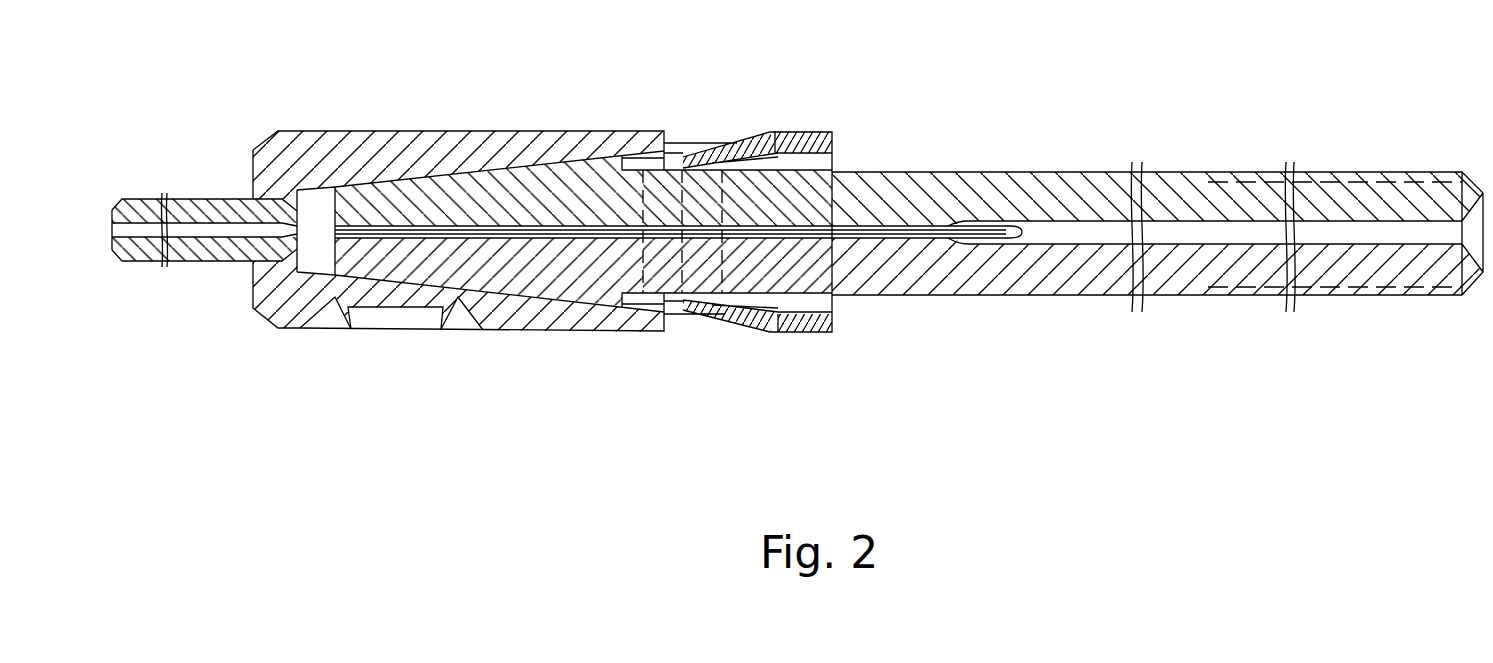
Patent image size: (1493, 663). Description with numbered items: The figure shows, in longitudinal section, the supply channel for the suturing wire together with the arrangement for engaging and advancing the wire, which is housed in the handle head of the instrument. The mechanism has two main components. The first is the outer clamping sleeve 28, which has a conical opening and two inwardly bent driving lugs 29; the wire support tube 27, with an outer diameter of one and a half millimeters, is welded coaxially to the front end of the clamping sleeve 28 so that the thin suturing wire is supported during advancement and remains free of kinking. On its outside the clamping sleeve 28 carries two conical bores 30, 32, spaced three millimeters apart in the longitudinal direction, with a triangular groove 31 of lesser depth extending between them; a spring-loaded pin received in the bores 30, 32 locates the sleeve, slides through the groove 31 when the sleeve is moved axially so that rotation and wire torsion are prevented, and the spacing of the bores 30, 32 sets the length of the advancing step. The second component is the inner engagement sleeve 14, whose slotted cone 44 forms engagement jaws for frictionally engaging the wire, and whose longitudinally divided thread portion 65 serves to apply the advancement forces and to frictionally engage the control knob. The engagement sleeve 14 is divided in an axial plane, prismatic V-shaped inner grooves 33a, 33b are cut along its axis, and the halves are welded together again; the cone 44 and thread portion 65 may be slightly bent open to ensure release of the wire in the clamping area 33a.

The inner engagement sleeve 14 is at (945, 198).
The wire support tube 27 is at (208, 207).
The clamping sleeve 28 is at (397, 148).
The driving lugs 29 is at (735, 143).
The conical bore 30 is at (340, 312).
The triangular groove 31 is at (405, 313).
The conical bore 32 is at (465, 313).
The inner groove (clamping area) 33a is at (565, 230).
The inner groove 33b is at (1175, 235).
The slotted cone 44 is at (543, 190).
The longitudinally divided thread portion 65 is at (1327, 197).